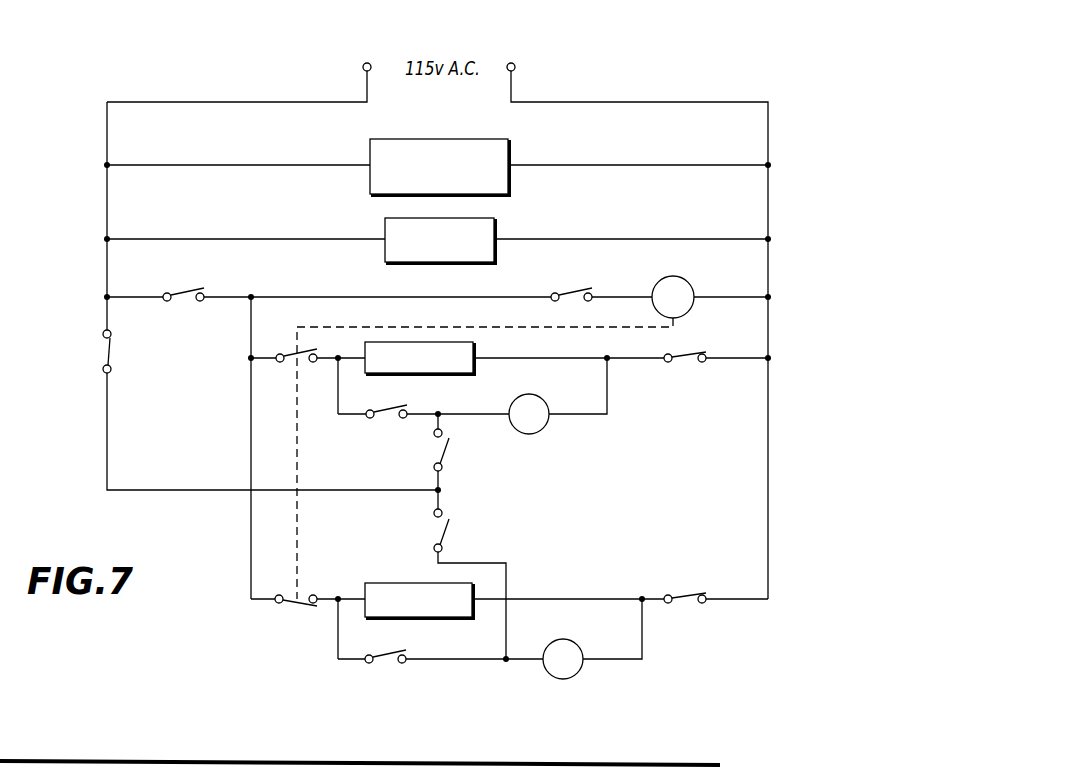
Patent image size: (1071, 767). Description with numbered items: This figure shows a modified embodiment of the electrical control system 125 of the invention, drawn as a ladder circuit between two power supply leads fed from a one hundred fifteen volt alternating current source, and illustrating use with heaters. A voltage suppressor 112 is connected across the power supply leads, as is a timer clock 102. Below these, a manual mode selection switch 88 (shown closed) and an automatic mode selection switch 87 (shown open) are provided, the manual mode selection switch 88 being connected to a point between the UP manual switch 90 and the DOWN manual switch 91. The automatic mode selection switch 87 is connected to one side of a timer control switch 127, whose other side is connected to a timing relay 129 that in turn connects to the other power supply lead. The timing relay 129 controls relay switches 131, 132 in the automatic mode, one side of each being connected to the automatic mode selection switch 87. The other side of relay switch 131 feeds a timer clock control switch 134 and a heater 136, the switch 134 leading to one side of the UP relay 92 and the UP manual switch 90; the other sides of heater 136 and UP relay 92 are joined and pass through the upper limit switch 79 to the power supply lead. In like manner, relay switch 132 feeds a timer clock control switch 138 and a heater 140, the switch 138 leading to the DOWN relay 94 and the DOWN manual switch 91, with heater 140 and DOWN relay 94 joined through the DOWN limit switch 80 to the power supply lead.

The upper limit switch 79 is at (690, 354).
The DOWN limit switch 80 is at (690, 597).
The automatic mode selection switch 87 is at (190, 292).
The manual mode selection switch 88 is at (111, 343).
The UP manual switch 90 is at (446, 452).
The DOWN manual switch 91 is at (450, 530).
The UP relay 92 is at (543, 428).
The DOWN relay 94 is at (577, 645).
The timer clock 102 is at (494, 222).
The voltage suppressor 112 is at (508, 142).
The electrical control system 125 is at (90, 388).
The timer control switch 127 is at (574, 290).
The timing relay 129 is at (688, 283).
The relay switch 131 is at (299, 356).
The relay switch 132 is at (296, 604).
The timer clock control switch 134 is at (392, 404).
The heater 136 is at (462, 374).
The timer clock control switch 138 is at (395, 650).
The heater 140 is at (397, 582).